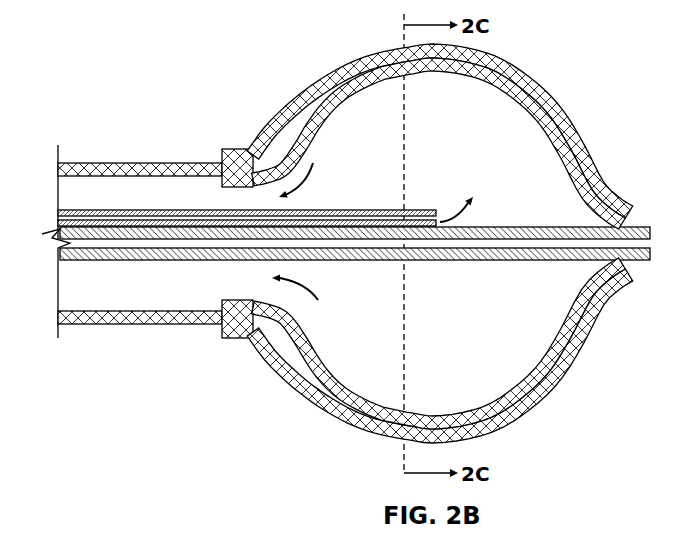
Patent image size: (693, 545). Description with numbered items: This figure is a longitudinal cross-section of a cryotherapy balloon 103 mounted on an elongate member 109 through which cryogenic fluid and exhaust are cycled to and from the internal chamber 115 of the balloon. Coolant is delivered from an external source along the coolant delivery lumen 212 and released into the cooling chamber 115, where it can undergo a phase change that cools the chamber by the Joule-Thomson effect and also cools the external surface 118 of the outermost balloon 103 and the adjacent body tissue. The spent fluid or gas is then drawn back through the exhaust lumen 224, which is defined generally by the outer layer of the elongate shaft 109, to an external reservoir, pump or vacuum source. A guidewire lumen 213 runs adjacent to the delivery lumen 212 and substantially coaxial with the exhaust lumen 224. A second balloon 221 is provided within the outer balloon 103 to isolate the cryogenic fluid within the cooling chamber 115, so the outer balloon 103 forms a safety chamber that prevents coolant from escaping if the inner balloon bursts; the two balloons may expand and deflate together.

The cryotherapy balloon 103 is at (502, 426).
The elongate member 109 is at (155, 267).
The internal chamber 115 is at (527, 143).
The external surface 118 is at (558, 416).
The coolant delivery lumen 212 is at (338, 212).
The guidewire lumen 213 is at (532, 257).
The second balloon 221 is at (322, 115).
The exhaust lumen 224 is at (167, 204).